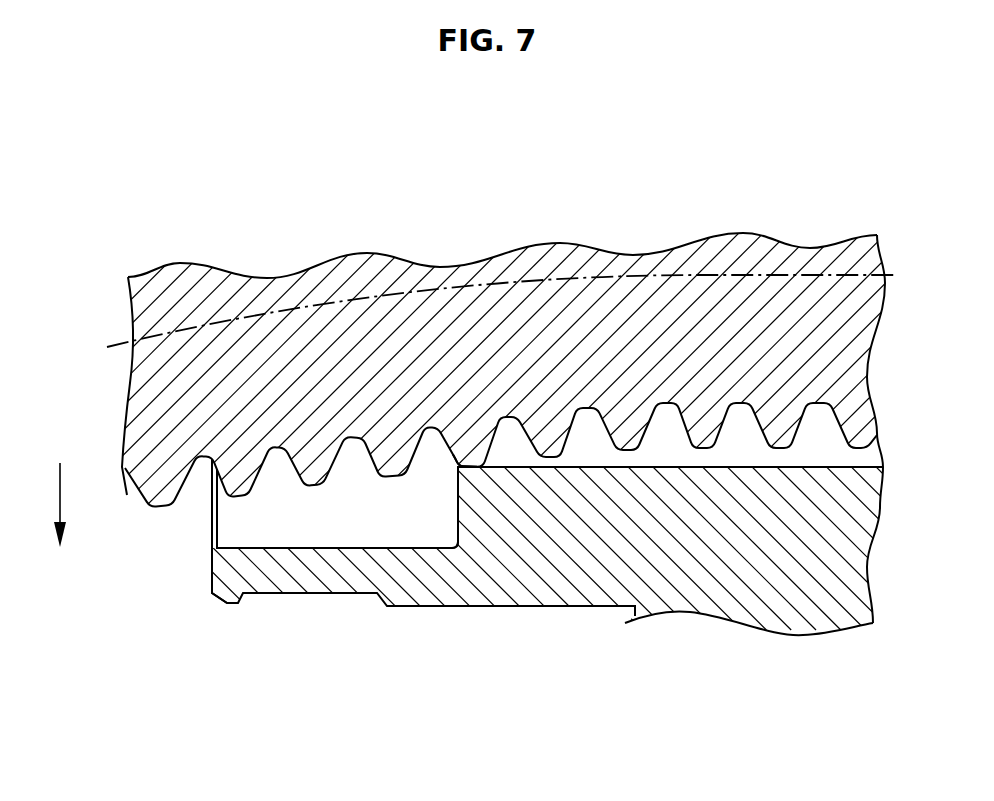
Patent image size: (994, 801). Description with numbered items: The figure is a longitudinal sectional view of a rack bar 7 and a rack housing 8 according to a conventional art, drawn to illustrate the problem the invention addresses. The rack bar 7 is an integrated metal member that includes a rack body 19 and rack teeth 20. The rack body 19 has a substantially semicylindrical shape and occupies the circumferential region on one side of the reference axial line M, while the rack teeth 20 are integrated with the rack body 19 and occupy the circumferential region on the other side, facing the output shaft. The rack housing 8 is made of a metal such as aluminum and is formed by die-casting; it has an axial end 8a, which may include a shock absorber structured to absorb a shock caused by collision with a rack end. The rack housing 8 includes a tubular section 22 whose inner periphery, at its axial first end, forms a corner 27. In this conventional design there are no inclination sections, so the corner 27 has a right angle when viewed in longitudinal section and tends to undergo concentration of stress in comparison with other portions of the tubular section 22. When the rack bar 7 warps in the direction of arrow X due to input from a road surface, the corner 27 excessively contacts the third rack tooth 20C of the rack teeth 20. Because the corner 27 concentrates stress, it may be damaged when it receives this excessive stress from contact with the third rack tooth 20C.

The rack bar 7 is at (257, 266).
The rack body 19 is at (170, 380).
The rack teeth 20 is at (333, 483).
The third rack tooth 20C is at (468, 455).
The rack housing 8 is at (510, 600).
The axial end 8a is at (210, 573).
The tubular section 22 is at (647, 542).
The corner 27 is at (470, 493).
The reference axial line M is at (125, 343).
The arrow X is at (71, 505).